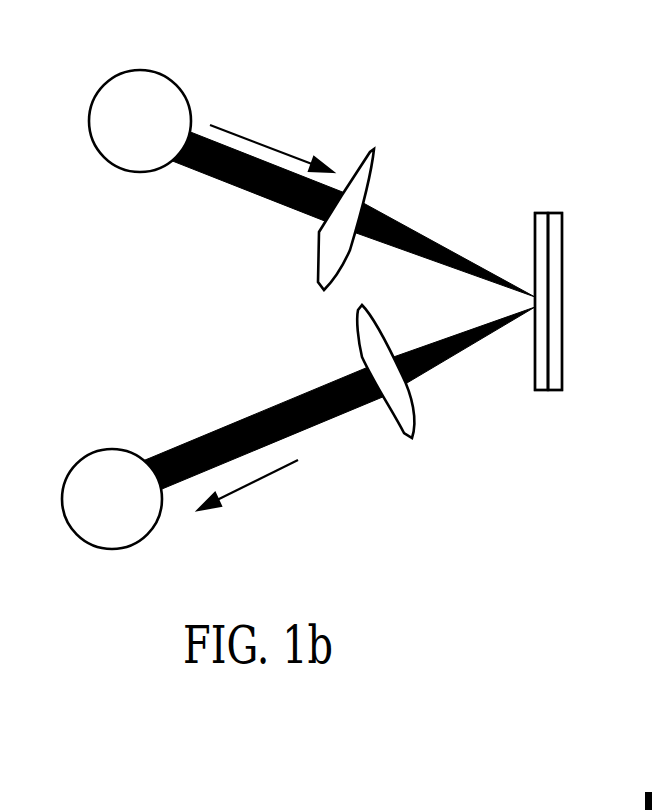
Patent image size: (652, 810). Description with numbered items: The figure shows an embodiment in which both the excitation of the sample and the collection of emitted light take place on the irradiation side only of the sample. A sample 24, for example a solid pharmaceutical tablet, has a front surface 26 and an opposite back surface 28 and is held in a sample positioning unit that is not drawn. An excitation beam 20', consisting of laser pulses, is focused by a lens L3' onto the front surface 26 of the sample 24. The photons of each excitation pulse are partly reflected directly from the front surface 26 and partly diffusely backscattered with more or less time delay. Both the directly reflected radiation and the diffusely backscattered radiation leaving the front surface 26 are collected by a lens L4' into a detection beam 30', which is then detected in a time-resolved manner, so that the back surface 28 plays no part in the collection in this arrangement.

The excitation beam 20' is at (347, 209).
The detection beam 30' is at (332, 403).
The sample 24 is at (545, 212).
The front surface 26 is at (537, 243).
The back surface 28 is at (565, 235).
The lens L3' is at (353, 177).
The lens L4' is at (388, 408).